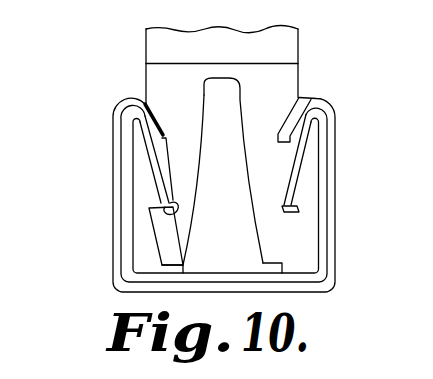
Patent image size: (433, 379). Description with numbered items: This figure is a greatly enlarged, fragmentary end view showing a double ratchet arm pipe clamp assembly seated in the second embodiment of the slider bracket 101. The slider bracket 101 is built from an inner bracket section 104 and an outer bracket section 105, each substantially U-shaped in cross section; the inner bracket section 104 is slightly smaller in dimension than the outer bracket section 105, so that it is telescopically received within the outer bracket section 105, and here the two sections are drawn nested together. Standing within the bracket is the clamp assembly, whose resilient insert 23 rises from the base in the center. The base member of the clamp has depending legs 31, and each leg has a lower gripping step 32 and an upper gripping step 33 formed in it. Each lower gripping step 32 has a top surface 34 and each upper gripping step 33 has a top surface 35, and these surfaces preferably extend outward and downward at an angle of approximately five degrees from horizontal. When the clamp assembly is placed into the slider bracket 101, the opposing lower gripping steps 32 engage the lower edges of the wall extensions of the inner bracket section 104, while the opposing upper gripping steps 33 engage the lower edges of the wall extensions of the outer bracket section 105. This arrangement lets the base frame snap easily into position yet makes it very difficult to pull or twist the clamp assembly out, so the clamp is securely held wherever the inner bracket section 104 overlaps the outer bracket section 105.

The slider bracket 101 is at (85, 84).
The resilient insert 23 is at (232, 243).
The depending legs 31 is at (173, 252).
The lower gripping step 32 is at (298, 225).
The upper gripping step 33 is at (287, 172).
The top surface 34 is at (161, 190).
The top surface 35 is at (164, 126).
The inner bracket section 104 is at (127, 230).
The outer bracket section 105 is at (112, 260).